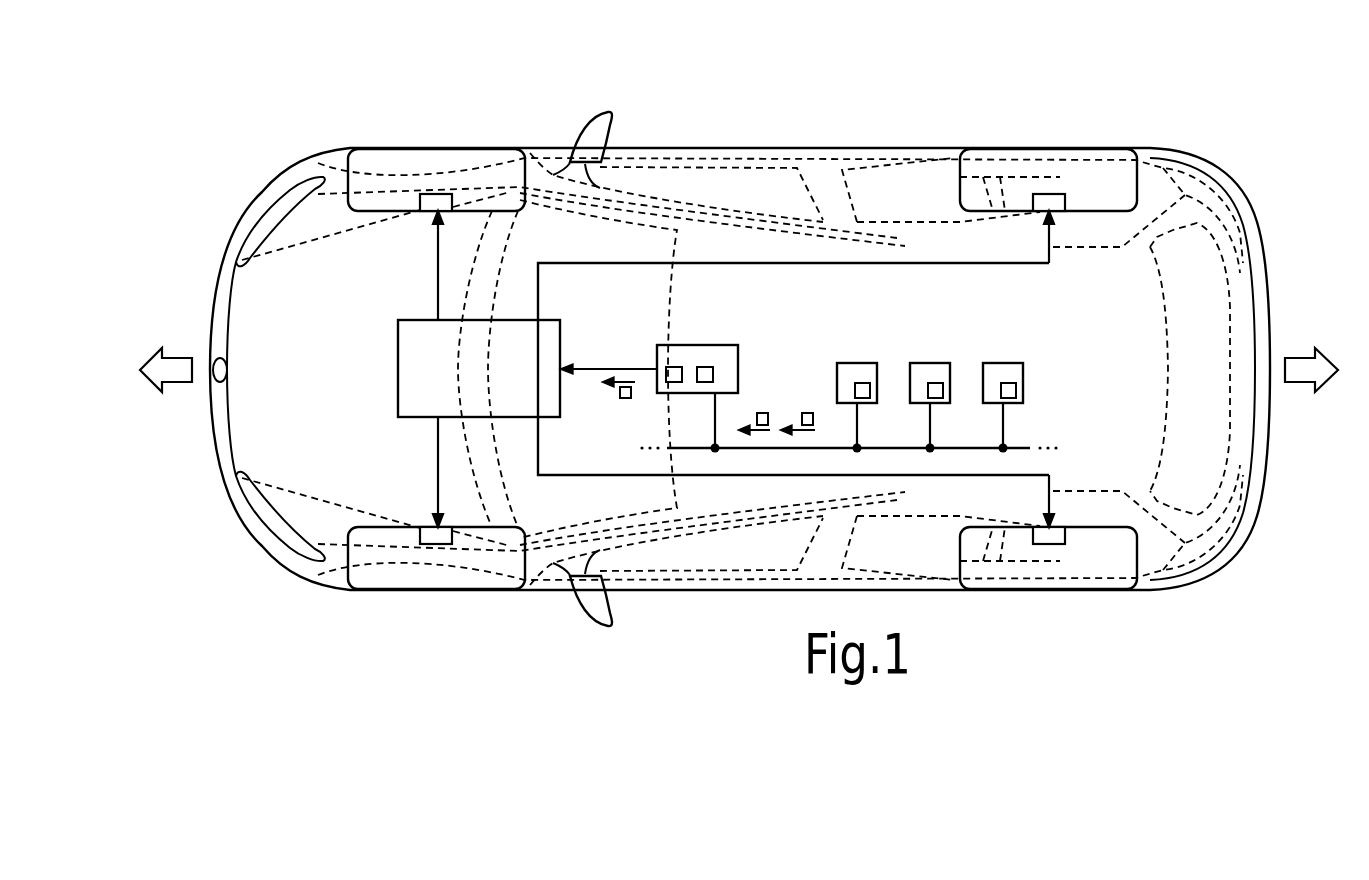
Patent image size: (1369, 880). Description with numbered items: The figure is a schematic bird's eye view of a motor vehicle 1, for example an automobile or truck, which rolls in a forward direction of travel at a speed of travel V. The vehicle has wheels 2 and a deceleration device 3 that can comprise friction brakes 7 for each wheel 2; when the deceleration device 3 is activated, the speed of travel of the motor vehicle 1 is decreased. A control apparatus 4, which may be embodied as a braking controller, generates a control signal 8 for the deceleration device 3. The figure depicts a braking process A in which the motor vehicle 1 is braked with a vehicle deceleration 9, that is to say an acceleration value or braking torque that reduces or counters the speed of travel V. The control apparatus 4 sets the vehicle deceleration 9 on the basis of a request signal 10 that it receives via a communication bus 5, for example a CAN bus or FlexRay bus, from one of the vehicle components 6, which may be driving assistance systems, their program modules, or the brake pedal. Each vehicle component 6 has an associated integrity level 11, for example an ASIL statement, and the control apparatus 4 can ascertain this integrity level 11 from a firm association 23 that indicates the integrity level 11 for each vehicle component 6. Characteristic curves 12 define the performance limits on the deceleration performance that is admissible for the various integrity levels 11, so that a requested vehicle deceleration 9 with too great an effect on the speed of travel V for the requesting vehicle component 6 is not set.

The motor vehicle 1 is at (720, 148).
The wheels 2 is at (527, 194).
The deceleration device 3 is at (426, 212).
The control apparatus 4 is at (738, 360).
The communication bus 5 is at (822, 450).
The vehicle components 6 is at (858, 363).
The friction brakes 7 is at (438, 194).
The control signal 8 is at (626, 398).
The vehicle deceleration 9 is at (1298, 358).
The request signal 10 is at (762, 413).
The integrity level 11 is at (807, 413).
The characteristic curves 12 is at (674, 367).
The firm association 23 is at (705, 367).
The speed of travel V is at (176, 358).
The braking process A is at (1167, 132).